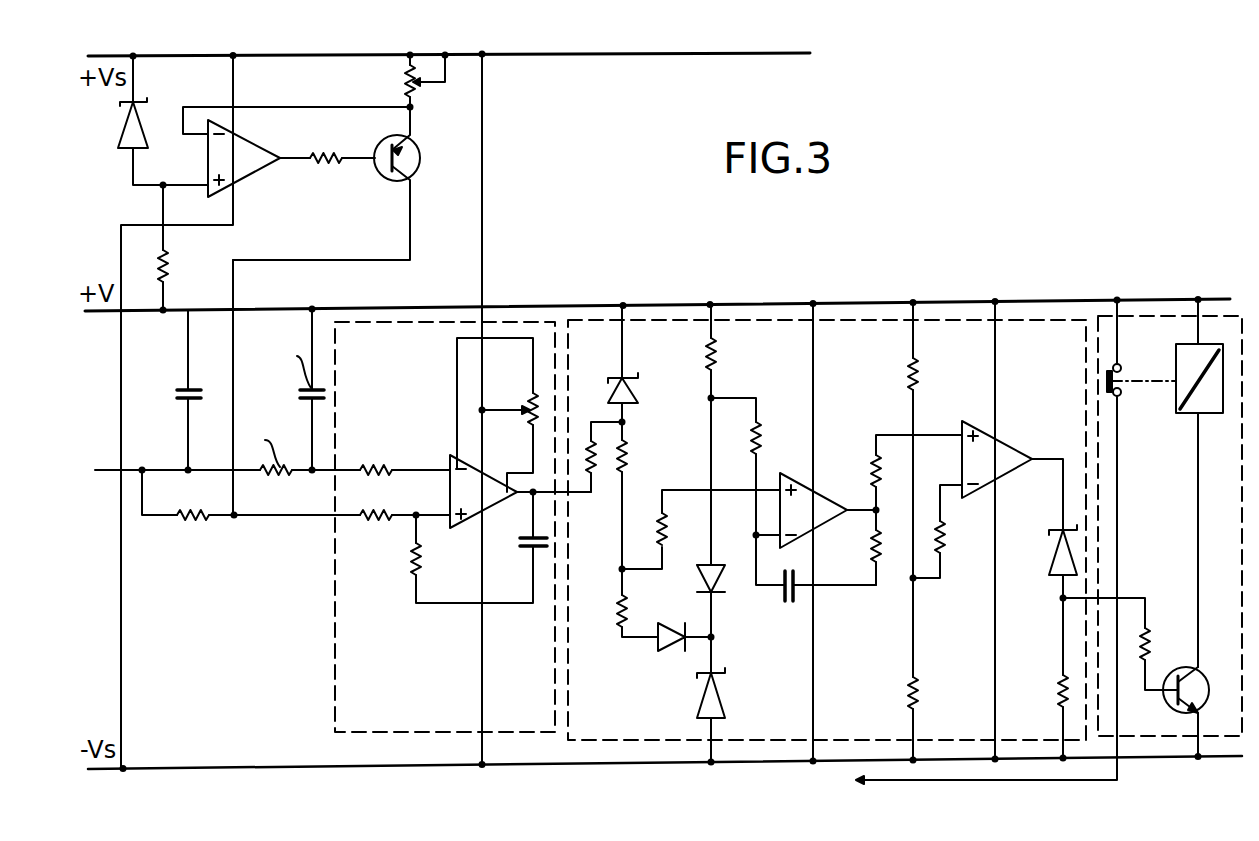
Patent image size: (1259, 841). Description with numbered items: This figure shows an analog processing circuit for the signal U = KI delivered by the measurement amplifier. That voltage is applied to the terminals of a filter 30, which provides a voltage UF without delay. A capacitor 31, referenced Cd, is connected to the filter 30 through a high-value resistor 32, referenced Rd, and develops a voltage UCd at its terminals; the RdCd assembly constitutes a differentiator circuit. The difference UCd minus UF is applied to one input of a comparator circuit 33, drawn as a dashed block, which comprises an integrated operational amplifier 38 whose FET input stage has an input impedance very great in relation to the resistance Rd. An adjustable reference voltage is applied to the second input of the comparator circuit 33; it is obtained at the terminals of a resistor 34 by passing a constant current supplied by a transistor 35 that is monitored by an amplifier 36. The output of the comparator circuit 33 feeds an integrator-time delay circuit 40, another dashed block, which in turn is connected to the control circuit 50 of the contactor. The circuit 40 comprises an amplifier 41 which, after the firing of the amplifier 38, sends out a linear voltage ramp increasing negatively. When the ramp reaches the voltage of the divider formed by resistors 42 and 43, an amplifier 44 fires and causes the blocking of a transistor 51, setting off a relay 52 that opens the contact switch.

The filter 30 is at (188, 400).
The capacitor Cd 31 is at (312, 400).
The resistor Rd 32 is at (282, 477).
The comparator circuit 33 is at (524, 330).
The resistor 34 is at (187, 520).
The transistor 35 is at (413, 172).
The amplifier 36 is at (240, 153).
The integrated operational amplifier 38 is at (450, 455).
The integrator-time delay circuit 40 is at (750, 330).
The amplifier 41 is at (801, 447).
The resistor 42 is at (917, 692).
The resistor 43 is at (912, 384).
The amplifier 44 is at (1007, 455).
The control circuit 50 is at (1235, 326).
The transistor 51 is at (1205, 682).
The relay 52 is at (1196, 405).